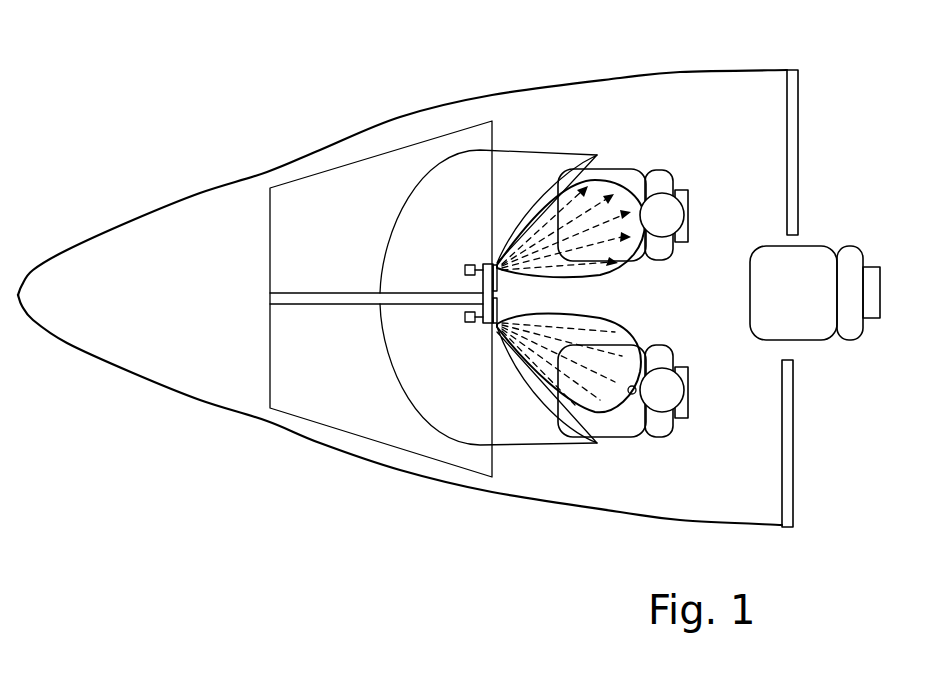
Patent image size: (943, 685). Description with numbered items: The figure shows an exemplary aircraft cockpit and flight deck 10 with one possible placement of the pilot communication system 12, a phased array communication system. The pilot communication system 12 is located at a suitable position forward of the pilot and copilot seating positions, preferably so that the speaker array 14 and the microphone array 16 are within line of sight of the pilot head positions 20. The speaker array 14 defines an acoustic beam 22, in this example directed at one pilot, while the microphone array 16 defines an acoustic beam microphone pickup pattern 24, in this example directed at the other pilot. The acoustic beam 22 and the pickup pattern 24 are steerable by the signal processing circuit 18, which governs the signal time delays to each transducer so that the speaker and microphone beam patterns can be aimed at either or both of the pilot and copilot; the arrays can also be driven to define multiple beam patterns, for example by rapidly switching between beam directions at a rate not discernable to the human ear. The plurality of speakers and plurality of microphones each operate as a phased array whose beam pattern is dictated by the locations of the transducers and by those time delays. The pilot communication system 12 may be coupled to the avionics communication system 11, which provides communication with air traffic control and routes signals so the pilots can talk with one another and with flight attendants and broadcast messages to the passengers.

The aircraft cockpit and flight deck 10 is at (624, 116).
The avionics communication system 11 is at (467, 323).
The pilot communication system 12 is at (482, 292).
The speaker array 14 is at (492, 264).
The microphone array 16 is at (498, 306).
The signal processing circuit 18 is at (465, 264).
The pilot head positions 20 is at (662, 207).
The acoustic beam 22 is at (596, 280).
The acoustic beam microphone pickup pattern 24 is at (622, 337).